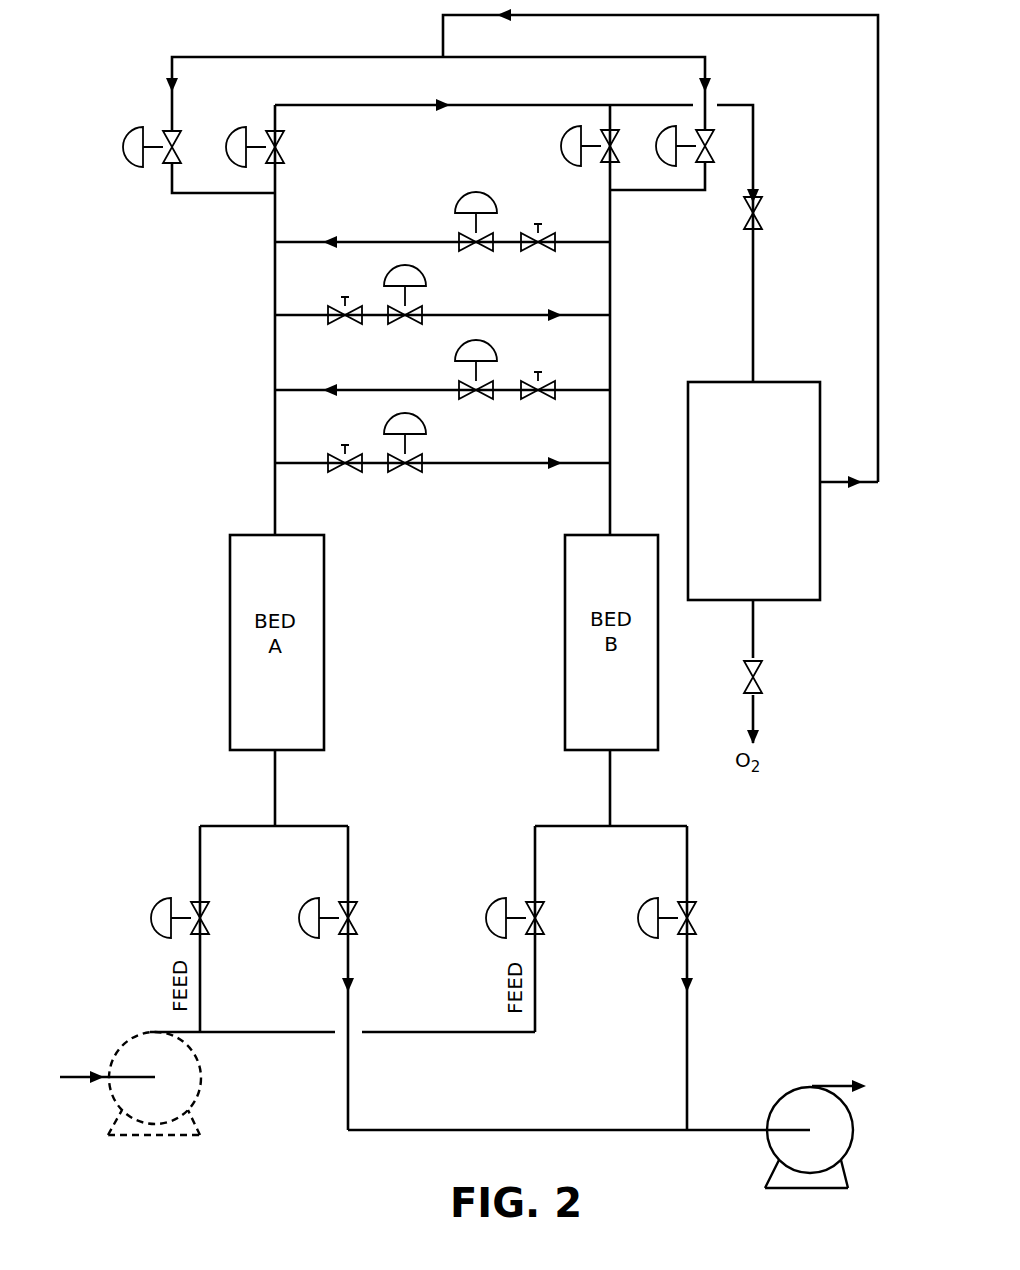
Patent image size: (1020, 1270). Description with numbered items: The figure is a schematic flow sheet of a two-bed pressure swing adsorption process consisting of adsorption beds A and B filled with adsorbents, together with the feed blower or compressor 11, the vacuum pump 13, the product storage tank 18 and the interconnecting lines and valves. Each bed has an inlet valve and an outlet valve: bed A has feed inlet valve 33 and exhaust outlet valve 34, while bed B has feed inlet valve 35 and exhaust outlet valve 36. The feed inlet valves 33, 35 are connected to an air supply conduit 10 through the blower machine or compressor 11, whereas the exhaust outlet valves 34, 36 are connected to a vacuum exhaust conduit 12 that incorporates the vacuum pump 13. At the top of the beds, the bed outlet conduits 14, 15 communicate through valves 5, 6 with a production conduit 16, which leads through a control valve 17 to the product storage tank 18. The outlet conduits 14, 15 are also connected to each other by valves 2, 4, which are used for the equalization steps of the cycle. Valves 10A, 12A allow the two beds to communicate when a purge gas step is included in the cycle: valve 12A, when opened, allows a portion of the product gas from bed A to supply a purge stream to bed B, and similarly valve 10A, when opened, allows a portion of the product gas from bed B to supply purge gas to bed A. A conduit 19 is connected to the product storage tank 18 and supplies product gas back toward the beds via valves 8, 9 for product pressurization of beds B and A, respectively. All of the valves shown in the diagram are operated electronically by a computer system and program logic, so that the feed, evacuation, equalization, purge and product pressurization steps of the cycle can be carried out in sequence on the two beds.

The valve 2 is at (451, 231).
The valve 4 is at (428, 305).
The valve 5 is at (262, 147).
The valve 6 is at (596, 146).
The valve 8 is at (691, 146).
The valve 9 is at (159, 147).
The air supply conduit 10 is at (100, 1078).
The valve 10A is at (455, 380).
The blower machine or compressor 11 is at (154, 1083).
The vacuum exhaust conduit 12 is at (579, 1113).
The valve 12A is at (426, 454).
The vacuum pump 13 is at (815, 1134).
The bed outlet conduit 14 is at (291, 320).
The bed outlet conduit 15 is at (626, 320).
The production conduit 16 is at (484, 117).
The control valve 17 is at (752, 209).
The product storage tank 18 is at (754, 491).
The conduit 19 is at (660, 245).
The feed inlet valve 33 is at (192, 918).
The exhaust outlet valve 34 is at (340, 918).
The feed inlet valve 35 is at (527, 918).
The exhaust outlet valve 36 is at (679, 918).